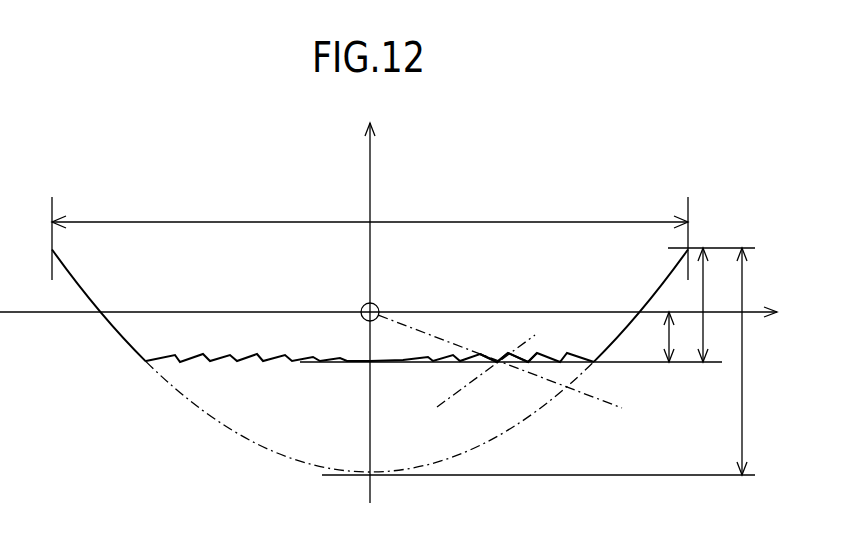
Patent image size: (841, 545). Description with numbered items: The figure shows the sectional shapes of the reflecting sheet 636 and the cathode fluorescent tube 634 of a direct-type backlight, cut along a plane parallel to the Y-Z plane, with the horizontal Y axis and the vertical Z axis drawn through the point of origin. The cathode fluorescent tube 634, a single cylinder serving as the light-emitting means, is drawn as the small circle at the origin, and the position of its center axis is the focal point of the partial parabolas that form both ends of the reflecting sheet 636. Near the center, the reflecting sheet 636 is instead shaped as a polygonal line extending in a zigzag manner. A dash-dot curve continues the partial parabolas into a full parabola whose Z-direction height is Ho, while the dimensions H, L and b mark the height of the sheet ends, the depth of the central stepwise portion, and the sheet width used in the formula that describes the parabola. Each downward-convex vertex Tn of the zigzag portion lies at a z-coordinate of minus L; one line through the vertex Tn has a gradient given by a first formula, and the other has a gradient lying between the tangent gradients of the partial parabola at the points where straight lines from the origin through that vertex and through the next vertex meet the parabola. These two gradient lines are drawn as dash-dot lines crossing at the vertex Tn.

The cathode fluorescent tube 634 is at (362, 305).
The reflecting sheet 636 is at (112, 328).
The width dimension b is at (370, 238).
The height H is at (709, 305).
The depth L is at (676, 337).
The parabola height H0 Ho is at (752, 361).
The vertex T_n Tn is at (497, 363).
The Y axis Y is at (396, 312).
The Z axis Z is at (369, 302).